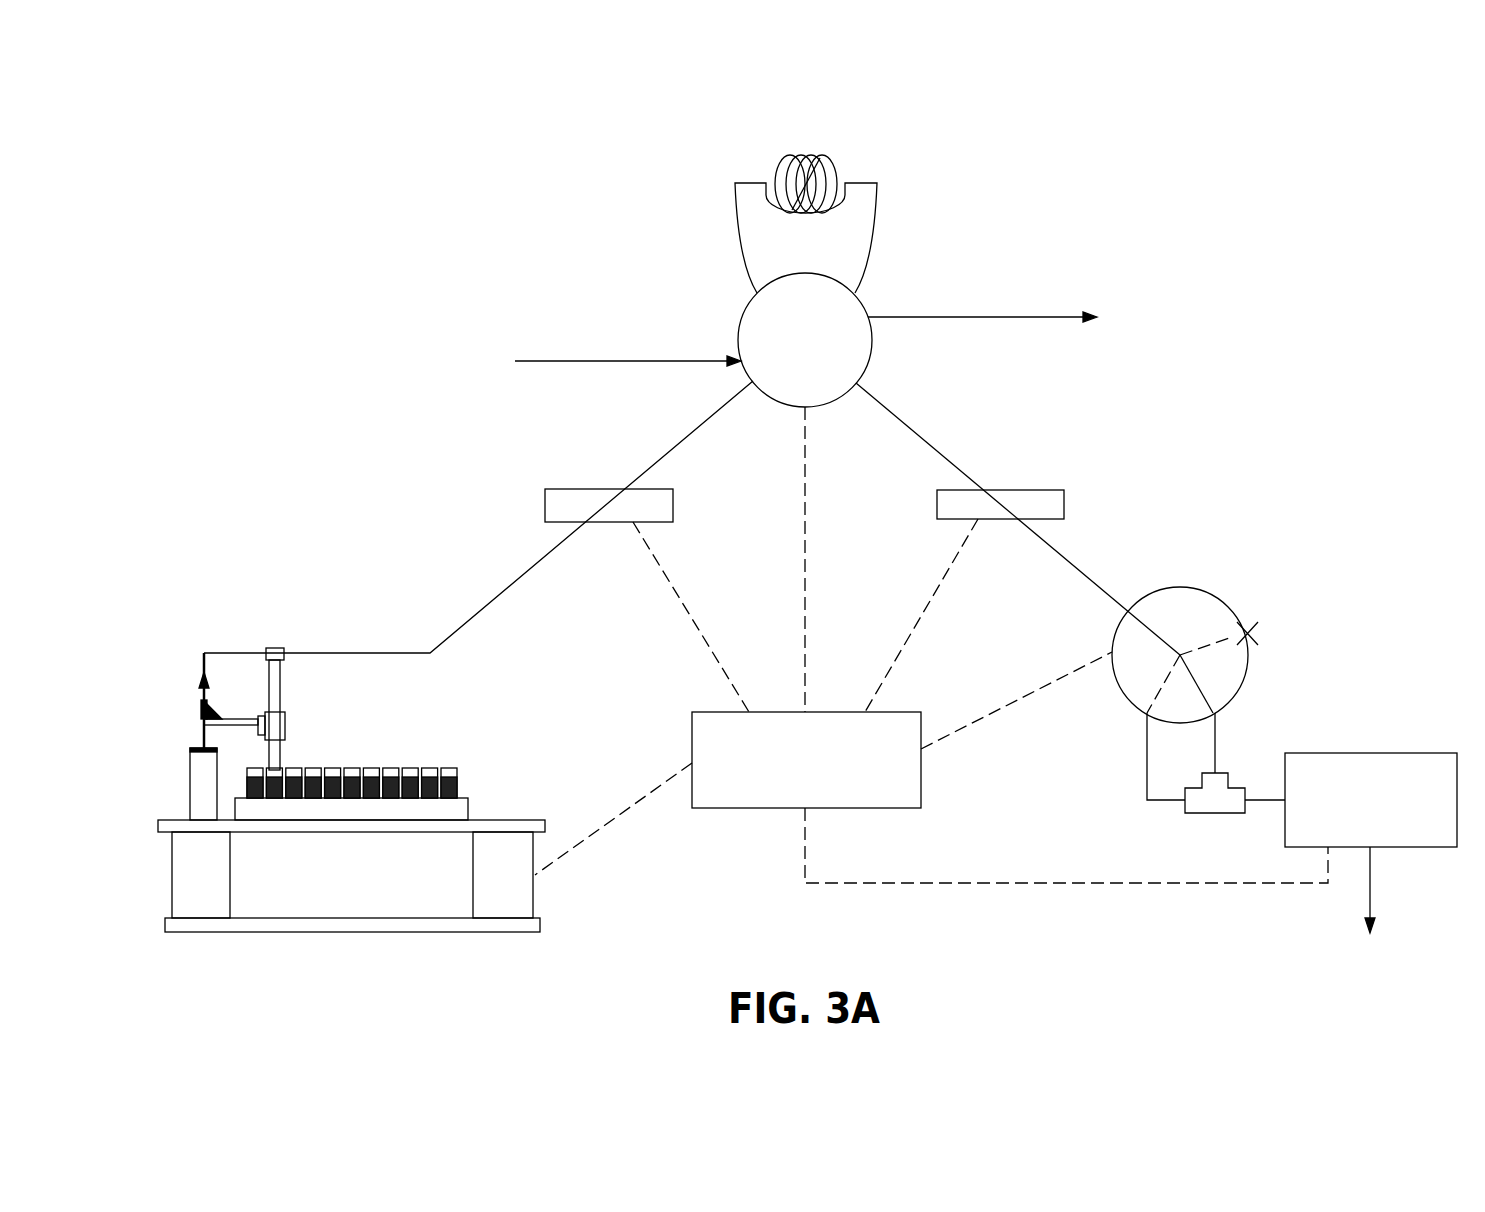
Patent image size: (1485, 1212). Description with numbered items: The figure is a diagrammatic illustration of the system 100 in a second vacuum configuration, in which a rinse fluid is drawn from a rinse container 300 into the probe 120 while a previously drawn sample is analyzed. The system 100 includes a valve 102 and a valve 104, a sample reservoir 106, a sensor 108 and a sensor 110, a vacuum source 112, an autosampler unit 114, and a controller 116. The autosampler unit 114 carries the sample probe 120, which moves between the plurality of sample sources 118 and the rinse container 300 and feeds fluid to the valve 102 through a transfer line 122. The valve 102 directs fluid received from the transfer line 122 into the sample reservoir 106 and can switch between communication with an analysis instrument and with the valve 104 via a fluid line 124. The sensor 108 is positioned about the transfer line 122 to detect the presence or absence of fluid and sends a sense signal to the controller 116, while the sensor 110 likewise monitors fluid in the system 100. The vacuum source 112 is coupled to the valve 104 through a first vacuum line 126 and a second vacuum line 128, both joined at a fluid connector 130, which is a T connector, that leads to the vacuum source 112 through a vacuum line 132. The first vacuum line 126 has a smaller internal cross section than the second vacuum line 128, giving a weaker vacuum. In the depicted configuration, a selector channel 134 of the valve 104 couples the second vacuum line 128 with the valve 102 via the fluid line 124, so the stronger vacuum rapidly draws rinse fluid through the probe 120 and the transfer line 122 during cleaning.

The system 100 is at (296, 312).
The valve 102 is at (738, 345).
The valve 104 is at (1145, 592).
The sample reservoir 106 is at (810, 152).
The sensor 108 is at (545, 503).
The sensor 110 is at (1064, 505).
The vacuum source 112 is at (1372, 752).
The autosampler unit 114 is at (485, 725).
The controller 116 is at (749, 808).
The sample sources 118 is at (473, 770).
The sample probe 120 is at (200, 735).
The transfer line 122 is at (552, 556).
The fluid line 124 is at (1055, 556).
The first vacuum line 126 is at (1145, 757).
The second vacuum line 128 is at (1218, 738).
The fluid connector 130 is at (1200, 815).
The vacuum line 132 is at (1263, 805).
The selector channel 134 is at (1200, 682).
The rinse container 300 is at (190, 787).